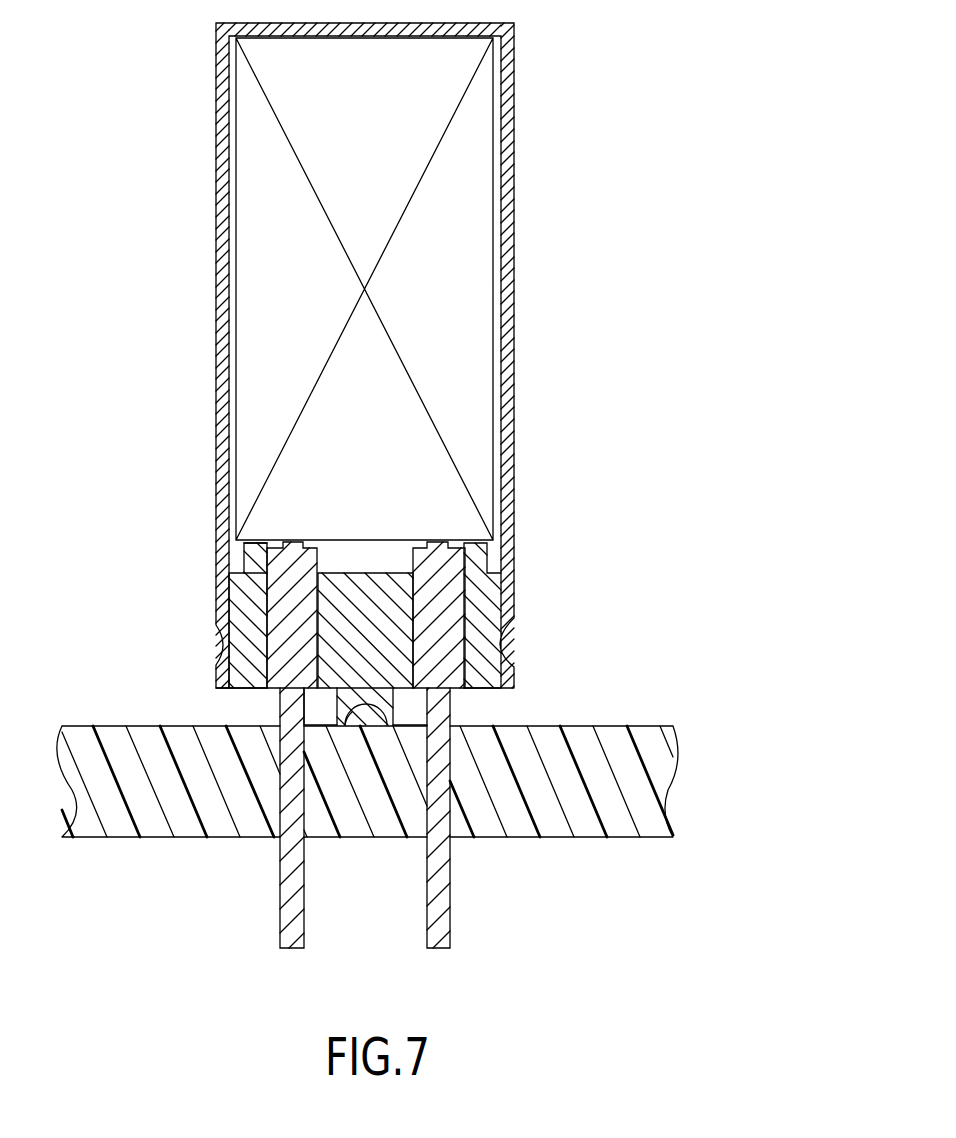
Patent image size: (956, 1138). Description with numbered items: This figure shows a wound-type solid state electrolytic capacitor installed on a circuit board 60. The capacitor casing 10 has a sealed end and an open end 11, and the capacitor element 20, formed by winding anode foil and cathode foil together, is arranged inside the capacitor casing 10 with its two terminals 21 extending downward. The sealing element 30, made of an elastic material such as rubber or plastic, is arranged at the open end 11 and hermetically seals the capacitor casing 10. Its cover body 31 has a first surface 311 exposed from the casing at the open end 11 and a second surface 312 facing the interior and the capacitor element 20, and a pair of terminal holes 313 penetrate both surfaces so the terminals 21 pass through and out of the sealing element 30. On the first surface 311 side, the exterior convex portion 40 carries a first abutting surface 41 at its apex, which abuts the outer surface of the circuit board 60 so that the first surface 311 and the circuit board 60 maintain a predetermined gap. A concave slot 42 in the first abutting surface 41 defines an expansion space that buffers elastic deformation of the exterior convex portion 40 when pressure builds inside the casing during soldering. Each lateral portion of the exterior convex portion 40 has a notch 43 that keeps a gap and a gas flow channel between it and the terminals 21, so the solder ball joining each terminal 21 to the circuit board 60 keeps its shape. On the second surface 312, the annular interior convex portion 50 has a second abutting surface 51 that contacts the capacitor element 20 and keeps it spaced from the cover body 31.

The capacitor casing 10 is at (508, 408).
The open end 11 is at (222, 672).
The capacitor element 20 is at (470, 316).
The terminal 21 is at (290, 918).
The sealing element 30 is at (362, 613).
The cover body 31 is at (237, 690).
The first surface 311 is at (485, 692).
The second surface 312 is at (375, 573).
The terminal hole 313 is at (487, 626).
The exterior convex portion 40 is at (335, 703).
The first abutting surface 41 is at (348, 717).
The slot 42 is at (370, 712).
The notch 43 is at (415, 703).
The interior convex portion 50 is at (253, 561).
The second abutting surface 51 is at (248, 538).
The circuit board 60 is at (623, 740).